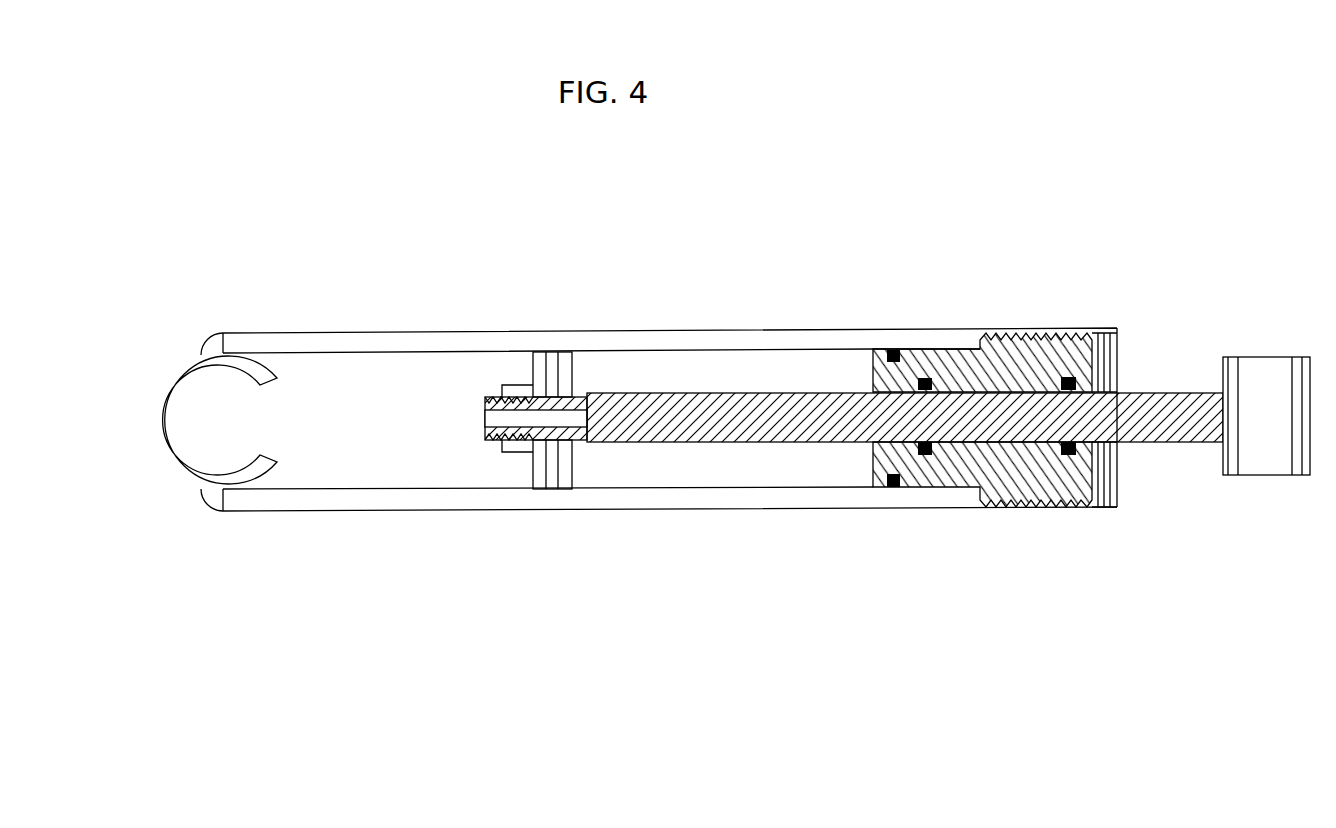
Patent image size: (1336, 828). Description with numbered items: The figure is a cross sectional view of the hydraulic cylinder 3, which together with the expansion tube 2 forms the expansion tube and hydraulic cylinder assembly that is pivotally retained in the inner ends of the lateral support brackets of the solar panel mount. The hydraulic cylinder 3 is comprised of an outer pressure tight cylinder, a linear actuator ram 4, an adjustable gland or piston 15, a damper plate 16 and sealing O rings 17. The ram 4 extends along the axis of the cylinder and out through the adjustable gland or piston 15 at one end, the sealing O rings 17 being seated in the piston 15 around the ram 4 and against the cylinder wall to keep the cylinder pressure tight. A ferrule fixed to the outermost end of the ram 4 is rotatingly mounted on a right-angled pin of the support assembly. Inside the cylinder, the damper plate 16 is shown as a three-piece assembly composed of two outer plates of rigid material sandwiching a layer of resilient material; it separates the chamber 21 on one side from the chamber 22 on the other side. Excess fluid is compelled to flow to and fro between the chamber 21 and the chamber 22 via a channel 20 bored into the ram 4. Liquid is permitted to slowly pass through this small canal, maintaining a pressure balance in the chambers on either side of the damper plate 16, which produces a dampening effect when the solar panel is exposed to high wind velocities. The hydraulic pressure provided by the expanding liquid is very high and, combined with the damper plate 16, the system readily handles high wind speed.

The expansion tube 2 is at (165, 336).
The hydraulic cylinder 3 is at (657, 498).
The linear actuator ram 4 is at (948, 526).
The adjustable gland or piston 15 is at (1035, 500).
The damper plate 16 is at (496, 516).
The sealing O rings 17 is at (981, 342).
The channel 20 is at (479, 327).
The chamber 21 is at (537, 364).
The chamber 22 is at (601, 271).